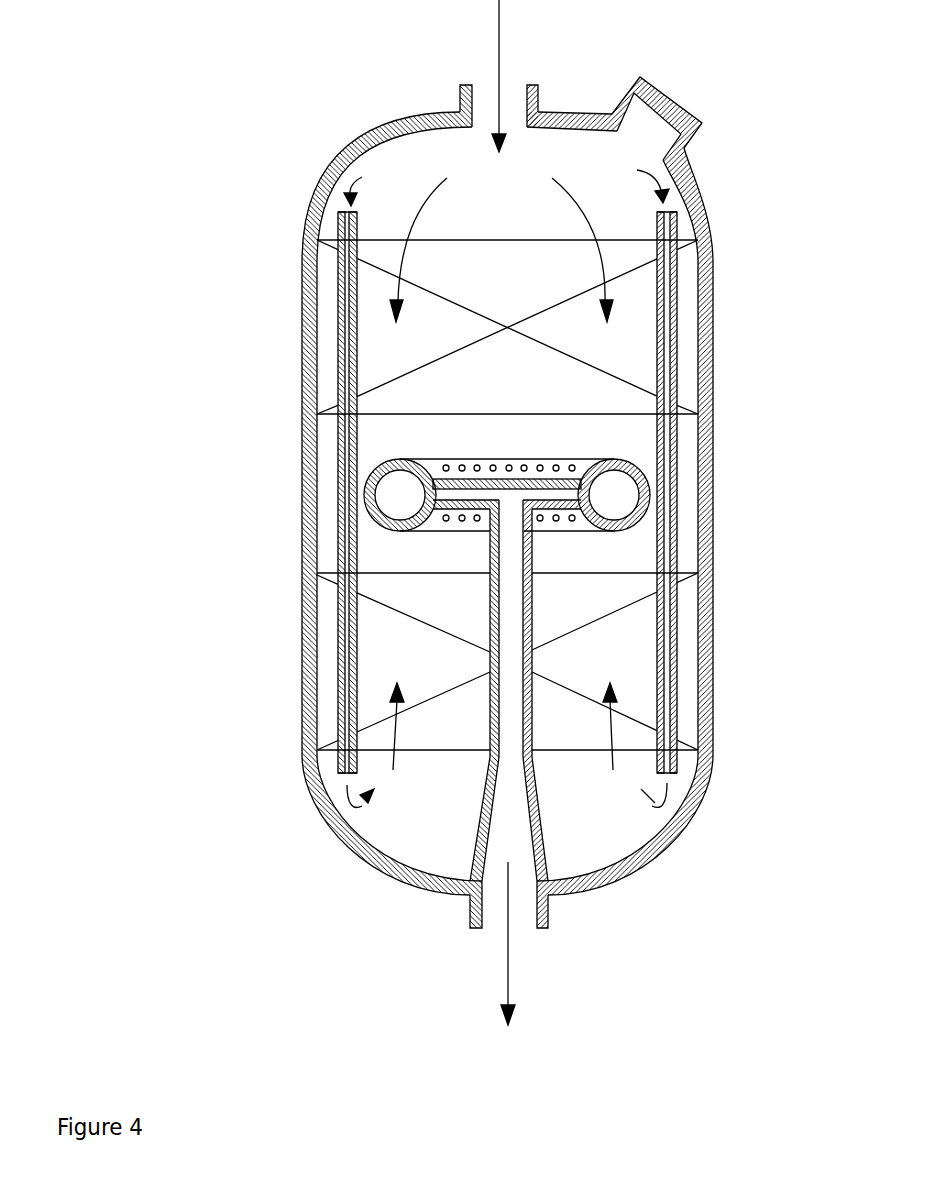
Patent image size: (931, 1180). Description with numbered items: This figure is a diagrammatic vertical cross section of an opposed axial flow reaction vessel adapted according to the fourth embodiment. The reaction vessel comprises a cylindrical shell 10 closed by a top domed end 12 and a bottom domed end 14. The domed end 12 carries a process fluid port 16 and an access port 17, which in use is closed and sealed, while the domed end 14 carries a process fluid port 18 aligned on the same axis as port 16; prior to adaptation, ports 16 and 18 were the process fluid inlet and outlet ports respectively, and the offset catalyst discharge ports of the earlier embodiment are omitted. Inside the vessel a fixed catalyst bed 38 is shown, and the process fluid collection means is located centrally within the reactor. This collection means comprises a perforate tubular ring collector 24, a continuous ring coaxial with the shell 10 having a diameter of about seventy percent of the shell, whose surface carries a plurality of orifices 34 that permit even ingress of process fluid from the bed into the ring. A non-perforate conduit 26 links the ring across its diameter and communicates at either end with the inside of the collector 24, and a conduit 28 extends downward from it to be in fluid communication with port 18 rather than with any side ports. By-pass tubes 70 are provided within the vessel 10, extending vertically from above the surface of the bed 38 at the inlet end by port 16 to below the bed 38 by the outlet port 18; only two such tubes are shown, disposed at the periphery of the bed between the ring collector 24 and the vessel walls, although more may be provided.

The cylindrical shell 10 is at (302, 380).
The domed end 12 is at (326, 164).
The domed end 14 is at (321, 822).
The process fluid port 16 is at (459, 96).
The access port 17 is at (692, 139).
The process fluid port 18 is at (470, 918).
The perforate ring collector 24 is at (367, 481).
The non-perforate conduit 26 is at (445, 493).
The conduit 28 is at (488, 618).
The orifices 34 is at (642, 519).
The bed 38 is at (630, 343).
The by-pass tubes 70 is at (672, 250).